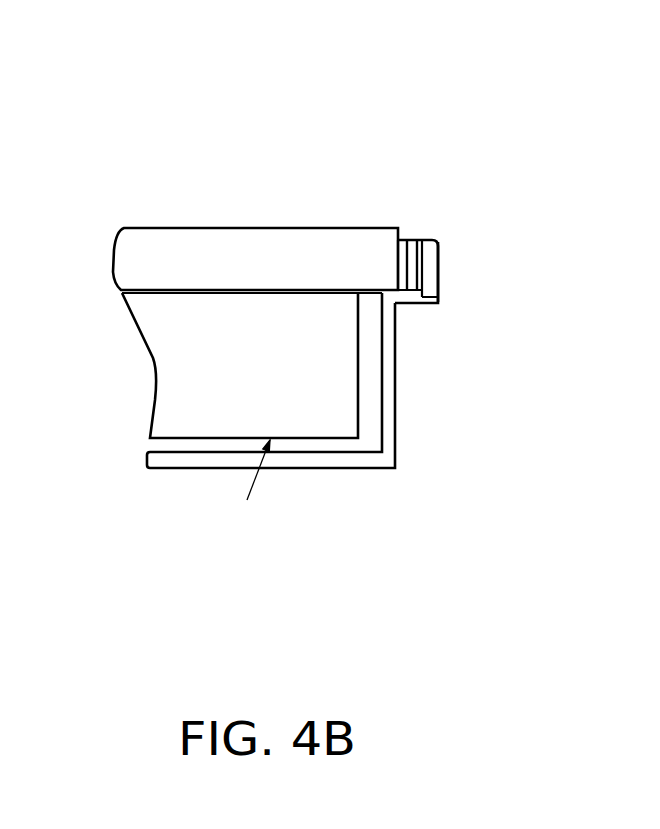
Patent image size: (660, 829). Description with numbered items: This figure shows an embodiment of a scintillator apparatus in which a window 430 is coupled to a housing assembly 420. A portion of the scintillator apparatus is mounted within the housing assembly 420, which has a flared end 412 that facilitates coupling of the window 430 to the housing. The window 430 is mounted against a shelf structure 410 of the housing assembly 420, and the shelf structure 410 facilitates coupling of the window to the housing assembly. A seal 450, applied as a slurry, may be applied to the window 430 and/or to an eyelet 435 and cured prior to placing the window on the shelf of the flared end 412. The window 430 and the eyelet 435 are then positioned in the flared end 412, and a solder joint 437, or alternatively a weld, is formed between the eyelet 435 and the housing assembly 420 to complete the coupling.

The window 430 is at (273, 227).
The housing assembly 420 is at (398, 405).
The shelf structure 410 is at (407, 297).
The flared end 412 is at (474, 267).
The seal 450 is at (404, 239).
The eyelet 435 is at (413, 239).
The solder joint 437 is at (426, 239).